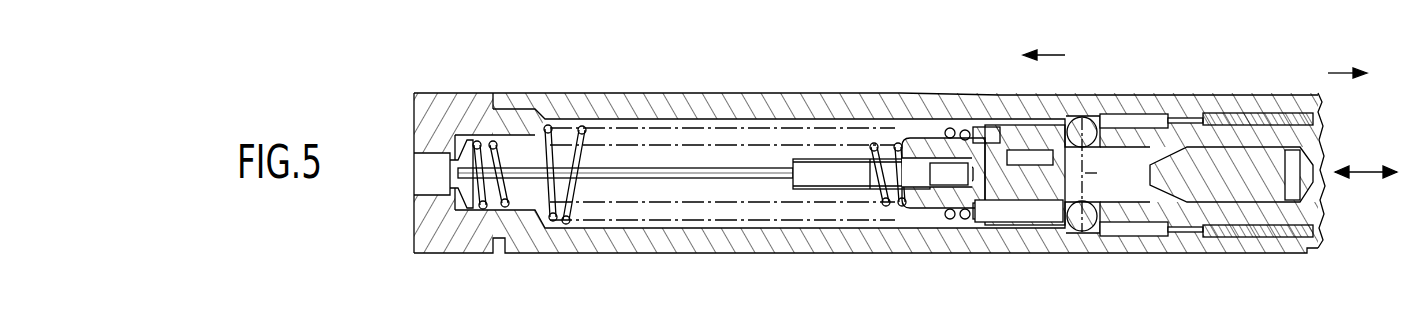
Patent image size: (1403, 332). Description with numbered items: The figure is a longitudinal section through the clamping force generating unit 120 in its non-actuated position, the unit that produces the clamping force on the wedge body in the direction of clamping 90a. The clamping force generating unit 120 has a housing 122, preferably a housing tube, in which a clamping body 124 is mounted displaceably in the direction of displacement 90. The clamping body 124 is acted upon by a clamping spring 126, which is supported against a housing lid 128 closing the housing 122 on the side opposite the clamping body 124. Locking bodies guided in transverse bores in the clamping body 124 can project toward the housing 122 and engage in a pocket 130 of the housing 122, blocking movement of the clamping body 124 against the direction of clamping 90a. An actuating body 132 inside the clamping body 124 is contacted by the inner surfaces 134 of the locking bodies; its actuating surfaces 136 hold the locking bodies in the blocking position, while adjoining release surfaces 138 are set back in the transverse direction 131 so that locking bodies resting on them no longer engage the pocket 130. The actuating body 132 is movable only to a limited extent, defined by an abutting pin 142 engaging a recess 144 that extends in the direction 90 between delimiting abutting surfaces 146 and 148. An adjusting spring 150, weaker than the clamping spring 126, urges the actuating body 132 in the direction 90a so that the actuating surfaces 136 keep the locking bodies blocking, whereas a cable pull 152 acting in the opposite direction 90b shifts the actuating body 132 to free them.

The direction of displacement 90 is at (1372, 180).
The direction of clamping 90a is at (1338, 71).
The direction opposed to the direction of clamping 90b is at (1065, 55).
The clamping force generating unit 120 is at (787, 254).
The housing 122 is at (1158, 248).
The clamping body 124 is at (1277, 212).
The clamping spring 126 is at (563, 216).
The housing lid 128 is at (462, 236).
The pocket 130 is at (1088, 118).
The transverse direction 131 is at (1106, 174).
The actuating body 132 is at (1222, 186).
The inner surfaces 134 is at (1002, 230).
The actuating surfaces 136 is at (1017, 128).
The release surfaces 138 is at (1128, 236).
The abutting pin 142 is at (927, 130).
The recess 144 is at (957, 128).
The abutting surface 146 is at (915, 128).
The abutting surface 148 is at (1000, 125).
The adjusting spring 150 is at (508, 212).
The cable pull 152 is at (617, 179).